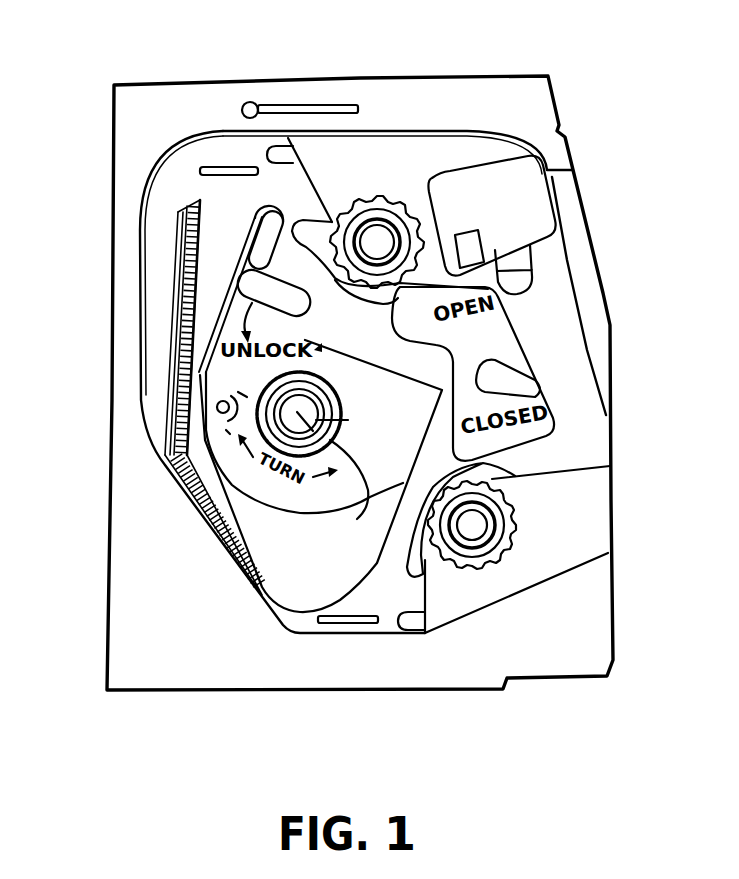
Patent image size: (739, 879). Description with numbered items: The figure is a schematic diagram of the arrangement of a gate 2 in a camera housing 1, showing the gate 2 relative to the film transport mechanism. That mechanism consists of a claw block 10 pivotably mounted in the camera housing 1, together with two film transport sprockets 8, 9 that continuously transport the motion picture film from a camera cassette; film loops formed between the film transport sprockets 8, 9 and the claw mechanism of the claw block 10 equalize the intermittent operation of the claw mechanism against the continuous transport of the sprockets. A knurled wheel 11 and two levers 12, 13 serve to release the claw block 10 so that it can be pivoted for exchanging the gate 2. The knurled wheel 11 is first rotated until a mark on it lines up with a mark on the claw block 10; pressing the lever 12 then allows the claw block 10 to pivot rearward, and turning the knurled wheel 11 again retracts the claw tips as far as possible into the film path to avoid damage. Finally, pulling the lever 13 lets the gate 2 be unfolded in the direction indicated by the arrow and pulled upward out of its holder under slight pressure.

The camera housing 1 is at (203, 660).
The gate 2 is at (176, 308).
The film transport sprocket 8 is at (377, 200).
The film transport sprocket 9 is at (503, 517).
The claw block 10 is at (270, 532).
The knurled wheel 11 is at (396, 486).
The lever 12 is at (282, 302).
The lever 13 is at (329, 98).